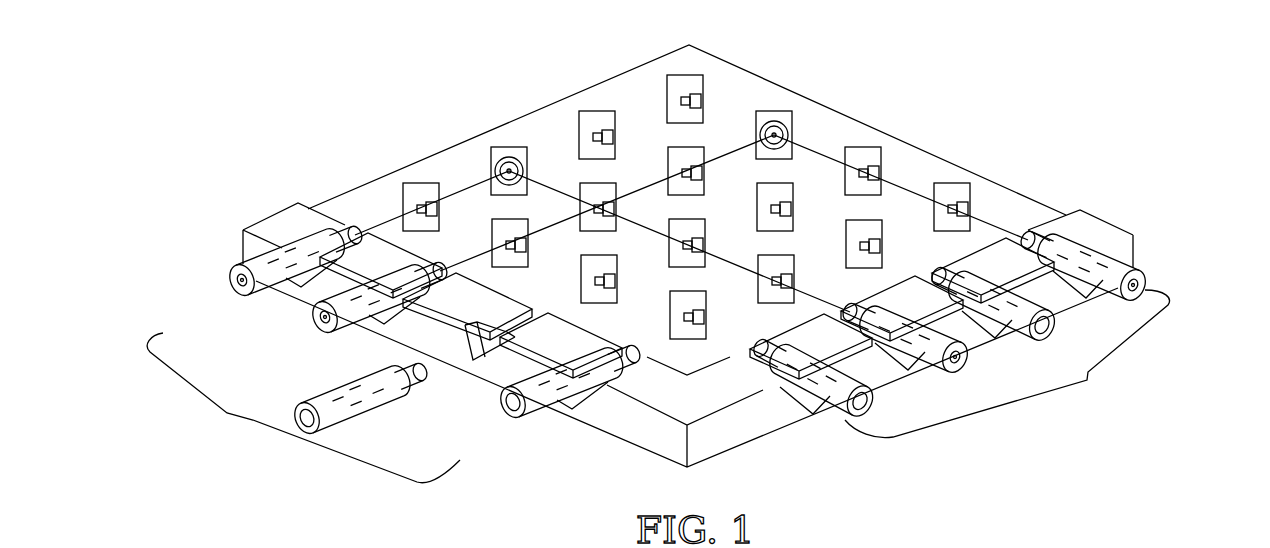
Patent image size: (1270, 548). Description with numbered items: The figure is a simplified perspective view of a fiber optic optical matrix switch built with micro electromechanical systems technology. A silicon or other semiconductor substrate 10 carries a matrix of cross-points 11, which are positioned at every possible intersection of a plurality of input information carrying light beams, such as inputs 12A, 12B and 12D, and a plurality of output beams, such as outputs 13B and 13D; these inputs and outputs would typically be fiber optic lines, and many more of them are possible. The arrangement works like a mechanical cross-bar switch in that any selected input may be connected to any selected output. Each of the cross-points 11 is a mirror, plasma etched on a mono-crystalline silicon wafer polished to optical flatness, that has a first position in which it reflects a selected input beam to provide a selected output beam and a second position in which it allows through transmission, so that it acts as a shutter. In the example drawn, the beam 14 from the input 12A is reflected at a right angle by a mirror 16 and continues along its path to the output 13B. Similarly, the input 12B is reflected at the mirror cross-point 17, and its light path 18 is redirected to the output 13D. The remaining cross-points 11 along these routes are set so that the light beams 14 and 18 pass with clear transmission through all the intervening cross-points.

The semiconductor substrate 10 is at (548, 105).
The cross-points 11 is at (597, 108).
The input beam 12A is at (247, 303).
The input beam 12B is at (313, 333).
The input beam 12D is at (530, 420).
The output beam 13B is at (975, 355).
The output beam 13D is at (1140, 280).
The beam 14 is at (417, 185).
The mirror 16 is at (509, 155).
The mirror cross-point 17 is at (779, 120).
The light path 18 is at (637, 190).